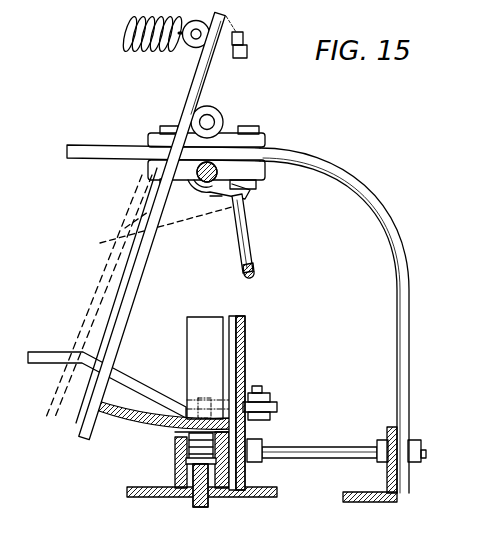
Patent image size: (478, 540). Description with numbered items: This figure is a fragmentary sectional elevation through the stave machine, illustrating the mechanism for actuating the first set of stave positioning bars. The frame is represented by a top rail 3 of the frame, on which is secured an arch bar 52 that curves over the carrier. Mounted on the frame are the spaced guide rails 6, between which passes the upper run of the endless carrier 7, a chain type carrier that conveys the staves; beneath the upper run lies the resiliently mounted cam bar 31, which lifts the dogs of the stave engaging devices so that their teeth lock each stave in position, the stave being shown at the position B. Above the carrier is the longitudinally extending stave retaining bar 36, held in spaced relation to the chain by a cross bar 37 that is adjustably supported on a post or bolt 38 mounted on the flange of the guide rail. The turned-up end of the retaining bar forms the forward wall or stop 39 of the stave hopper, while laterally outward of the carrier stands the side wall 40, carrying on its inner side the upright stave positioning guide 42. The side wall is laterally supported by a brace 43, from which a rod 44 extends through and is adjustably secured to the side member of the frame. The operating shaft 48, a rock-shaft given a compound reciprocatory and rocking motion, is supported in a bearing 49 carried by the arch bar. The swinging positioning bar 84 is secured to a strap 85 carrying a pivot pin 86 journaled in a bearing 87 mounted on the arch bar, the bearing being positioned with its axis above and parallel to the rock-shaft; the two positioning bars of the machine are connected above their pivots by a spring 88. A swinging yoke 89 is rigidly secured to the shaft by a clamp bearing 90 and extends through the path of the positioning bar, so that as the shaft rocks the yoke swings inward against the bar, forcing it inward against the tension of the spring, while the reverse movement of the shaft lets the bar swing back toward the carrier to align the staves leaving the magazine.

The top rail 3 is at (388, 479).
The guide rail 6 is at (187, 467).
The endless carrier 7 is at (177, 443).
The cam bar 31 is at (183, 483).
The stave retaining bar 36 is at (187, 417).
The cross bar 37 is at (135, 380).
The post or bolt 38 is at (267, 422).
The forward wall or stop 39 is at (192, 333).
The side wall 40 is at (242, 343).
The upright stave positioning guide 42 is at (234, 368).
The brace 43 is at (263, 464).
The rod 44 is at (328, 448).
The operating shaft 48 is at (196, 186).
The bearing 49 is at (160, 181).
The arch bar 52 is at (357, 183).
The swinging positioning bar 84 is at (120, 307).
The strap 85 is at (218, 78).
The pivot pin 86 is at (213, 118).
The bearing 87 is at (240, 140).
The spring 88 is at (147, 52).
The swinging yoke 89 is at (248, 254).
The clamp bearing 90 is at (212, 197).
The moving position of the stave B is at (116, 414).